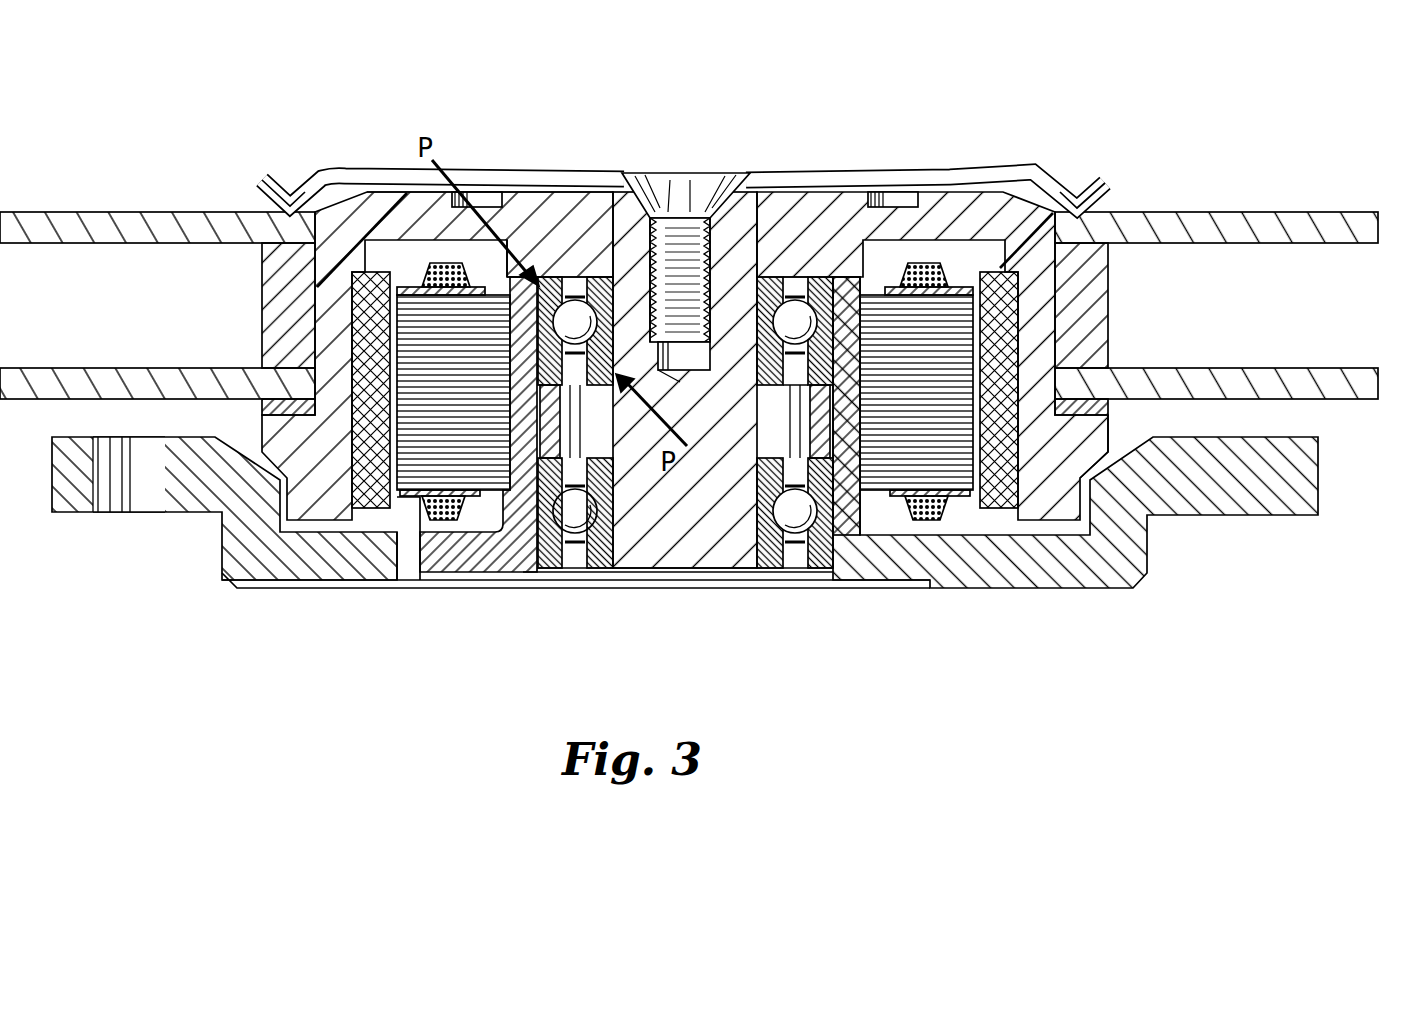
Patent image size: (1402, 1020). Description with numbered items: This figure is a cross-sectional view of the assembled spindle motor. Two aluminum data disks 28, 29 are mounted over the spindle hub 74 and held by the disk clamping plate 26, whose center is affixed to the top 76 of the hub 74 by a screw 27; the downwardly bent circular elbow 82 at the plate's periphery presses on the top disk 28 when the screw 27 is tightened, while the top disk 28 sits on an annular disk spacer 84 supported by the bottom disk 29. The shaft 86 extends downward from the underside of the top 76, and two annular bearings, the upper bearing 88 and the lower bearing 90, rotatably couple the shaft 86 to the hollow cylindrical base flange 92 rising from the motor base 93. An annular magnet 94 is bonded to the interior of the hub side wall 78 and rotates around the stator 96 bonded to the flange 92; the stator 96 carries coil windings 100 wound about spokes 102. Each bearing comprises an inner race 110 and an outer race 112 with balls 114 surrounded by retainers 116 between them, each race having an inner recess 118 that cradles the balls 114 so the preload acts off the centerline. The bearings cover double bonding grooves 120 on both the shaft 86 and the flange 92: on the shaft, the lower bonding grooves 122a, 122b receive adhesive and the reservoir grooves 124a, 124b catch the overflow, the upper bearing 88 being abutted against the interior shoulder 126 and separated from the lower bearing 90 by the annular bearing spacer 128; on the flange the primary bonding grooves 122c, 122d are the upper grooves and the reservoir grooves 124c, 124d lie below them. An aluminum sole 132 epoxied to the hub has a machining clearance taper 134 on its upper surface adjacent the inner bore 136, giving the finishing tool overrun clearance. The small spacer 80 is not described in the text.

The disk clamping plate 26 is at (975, 168).
The screw 27 is at (683, 187).
The top data disk 28 is at (62, 216).
The bottom data disk 29 is at (60, 376).
The spindle hub 74 is at (338, 214).
The top of the hub 76 is at (388, 202).
The spindle hub side wall 78 is at (325, 320).
The lower spacer 80 is at (278, 440).
The circular elbow 82 is at (1077, 198).
The annular disk spacer 84 is at (278, 282).
The shaft 86 is at (632, 523).
The upper bearing 88 is at (557, 266).
The lower bearing 90 is at (624, 534).
The base flange 92 is at (503, 557).
The motor base 93 is at (237, 550).
The annular magnet 94 is at (350, 480).
The stator 96 is at (402, 512).
The coil windings 100 is at (450, 522).
The spokes 102 is at (517, 494).
The inner race 110 is at (633, 258).
The outer race 112 is at (540, 275).
The balls 114 is at (590, 285).
The retainers 116 is at (578, 300).
The inner recess 118 is at (820, 277).
The double bonding grooves 120 is at (522, 349).
The lower bonding groove of the top pair 122a is at (757, 342).
The lower bonding groove of the bottom pair 122b is at (782, 572).
The primary bonding groove 122c is at (860, 280).
The primary bonding groove 122d is at (840, 495).
The upper reservoir groove 124a is at (750, 280).
The reservoir groove 124b is at (757, 505).
The reservoir groove 124c is at (852, 357).
The reservoir groove 124d is at (833, 560).
The interior shoulder 126 is at (780, 263).
The annular bearing spacer 128 is at (812, 422).
The aluminum sole 132 is at (1107, 408).
The machining clearance taper 134 is at (1064, 398).
The inner bore 136 is at (1052, 413).